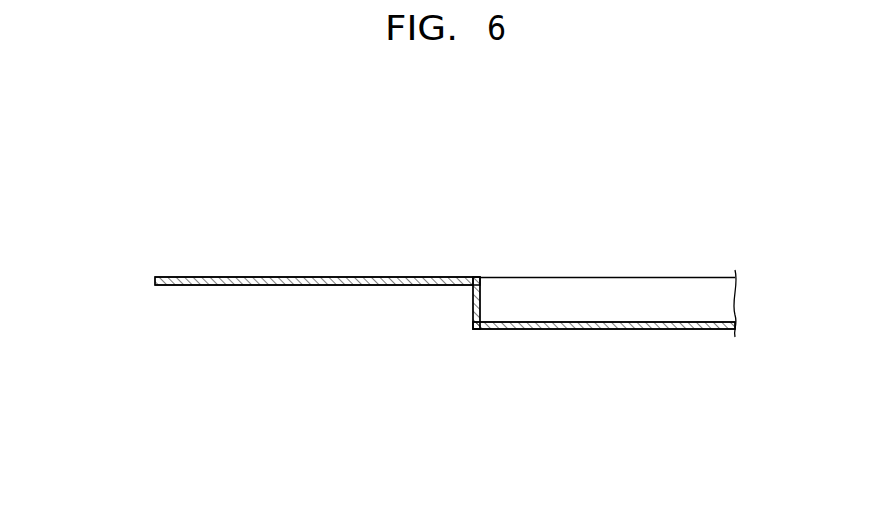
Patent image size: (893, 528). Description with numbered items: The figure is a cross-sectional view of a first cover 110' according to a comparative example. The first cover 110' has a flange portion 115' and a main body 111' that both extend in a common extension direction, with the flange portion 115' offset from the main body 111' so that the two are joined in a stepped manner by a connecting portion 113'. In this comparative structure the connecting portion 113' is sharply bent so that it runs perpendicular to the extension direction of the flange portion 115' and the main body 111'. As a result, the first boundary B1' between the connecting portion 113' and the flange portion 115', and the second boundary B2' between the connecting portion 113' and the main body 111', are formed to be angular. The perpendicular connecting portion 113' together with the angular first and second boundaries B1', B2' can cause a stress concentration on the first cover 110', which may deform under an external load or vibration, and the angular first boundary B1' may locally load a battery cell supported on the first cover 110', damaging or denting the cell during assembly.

The first cover 110' is at (386, 330).
The flange portion 115' is at (314, 312).
The connecting portion 113' is at (521, 285).
The main body 111' is at (604, 327).
The first boundary B1' is at (478, 244).
The second boundary B2' is at (463, 353).